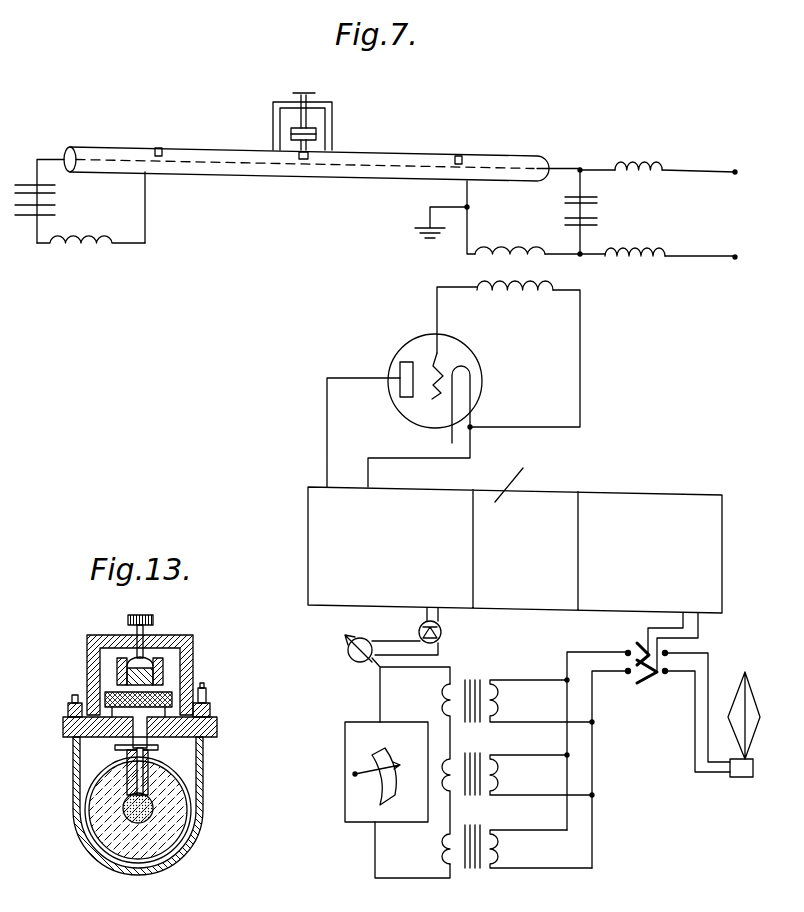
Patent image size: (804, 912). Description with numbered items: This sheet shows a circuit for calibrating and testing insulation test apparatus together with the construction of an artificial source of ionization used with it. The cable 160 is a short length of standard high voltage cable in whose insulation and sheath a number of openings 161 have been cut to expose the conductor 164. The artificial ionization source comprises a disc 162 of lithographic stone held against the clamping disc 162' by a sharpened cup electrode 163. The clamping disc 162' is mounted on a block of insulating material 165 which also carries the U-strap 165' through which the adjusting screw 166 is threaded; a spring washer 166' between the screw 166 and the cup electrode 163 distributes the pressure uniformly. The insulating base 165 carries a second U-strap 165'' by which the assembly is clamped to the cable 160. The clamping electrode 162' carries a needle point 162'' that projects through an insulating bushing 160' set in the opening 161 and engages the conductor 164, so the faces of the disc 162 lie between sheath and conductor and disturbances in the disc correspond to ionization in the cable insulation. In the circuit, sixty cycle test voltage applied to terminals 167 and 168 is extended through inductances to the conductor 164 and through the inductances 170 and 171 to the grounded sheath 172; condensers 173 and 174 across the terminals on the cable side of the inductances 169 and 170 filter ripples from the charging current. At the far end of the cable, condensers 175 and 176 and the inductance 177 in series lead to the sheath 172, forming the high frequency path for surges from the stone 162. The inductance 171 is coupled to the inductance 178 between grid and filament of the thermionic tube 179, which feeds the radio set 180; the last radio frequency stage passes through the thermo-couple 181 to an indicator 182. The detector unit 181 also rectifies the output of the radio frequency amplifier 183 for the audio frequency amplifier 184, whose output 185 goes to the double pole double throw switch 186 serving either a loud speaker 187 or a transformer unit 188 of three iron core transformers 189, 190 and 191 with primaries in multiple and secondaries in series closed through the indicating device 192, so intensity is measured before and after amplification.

In FIG. 7, the cable 160 is at (306, 147).
In FIG. 13, the cable 160 is at (182, 810).
In FIG. 13, the insulating bushing 160' is at (196, 766).
In FIG. 7, the openings 161 is at (310, 156).
In FIG. 7, the disc of lithographic stone 162 is at (274, 132).
In FIG. 13, the disc of lithographic stone 162 is at (218, 679).
In FIG. 13, the clamping disc 162' is at (53, 717).
In FIG. 13, the needle point 162'' is at (67, 819).
In FIG. 7, the sharpened cup electrode 163 is at (300, 152).
In FIG. 13, the sharpened cup electrode 163 is at (165, 672).
In FIG. 7, the conductor 164 is at (53, 152).
In FIG. 13, the conductor 164 is at (155, 820).
In FIG. 13, the block of insulating material 165 is at (167, 710).
In FIG. 7, the U-strap 165' is at (297, 114).
In FIG. 13, the U-strap 165' is at (109, 675).
In FIG. 13, the second U-strap 165'' is at (175, 806).
In FIG. 7, the adjusting screw 166 is at (329, 98).
In FIG. 13, the adjusting screw 166 is at (170, 634).
In FIG. 13, the spring washer 166' is at (196, 650).
In FIG. 7, the terminal 167 is at (737, 168).
In FIG. 7, the terminal 168 is at (734, 262).
In FIG. 7, the inductance 169 is at (640, 162).
In FIG. 7, the inductance 170 is at (650, 248).
In FIG. 7, the inductance 171 is at (508, 248).
In FIG. 7, the grounded sheath 172 is at (490, 180).
In FIG. 7, the condenser 173 is at (601, 199).
In FIG. 7, the condenser 174 is at (601, 221).
In FIG. 7, the condenser 175 is at (58, 188).
In FIG. 7, the condenser 176 is at (58, 210).
In FIG. 7, the inductance 177 is at (78, 252).
In FIG. 7, the inductance 178 is at (517, 298).
In FIG. 7, the thermionic tube 179 is at (420, 344).
In FIG. 7, the radio set 180 is at (325, 520).
In FIG. 7, the thermo-couple 181 is at (442, 633).
In FIG. 7, the indicator 182 is at (366, 638).
In FIG. 7, the radio frequency amplifier 183 is at (520, 508).
In FIG. 7, the audio frequency amplifier 184 is at (645, 503).
In FIG. 7, the output 185 is at (696, 623).
In FIG. 7, the double pole double throw switch 186 is at (635, 683).
In FIG. 7, the loud speaker 187 is at (735, 780).
In FIG. 7, the transformer unit 188 is at (503, 674).
In FIG. 7, the iron core transformer 189 is at (497, 702).
In FIG. 7, the iron core transformer 190 is at (497, 777).
In FIG. 7, the iron core transformer 191 is at (497, 848).
In FIG. 7, the indicating device 192 is at (368, 720).